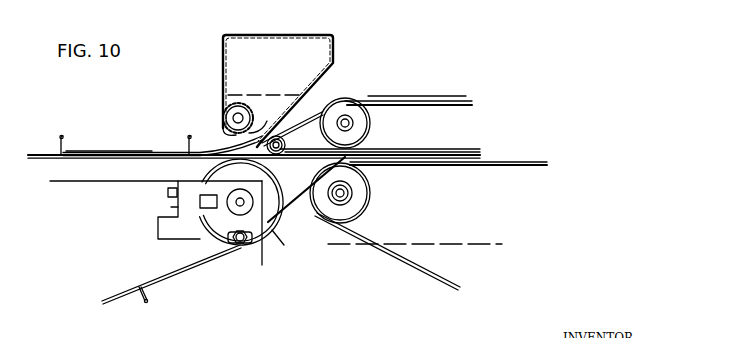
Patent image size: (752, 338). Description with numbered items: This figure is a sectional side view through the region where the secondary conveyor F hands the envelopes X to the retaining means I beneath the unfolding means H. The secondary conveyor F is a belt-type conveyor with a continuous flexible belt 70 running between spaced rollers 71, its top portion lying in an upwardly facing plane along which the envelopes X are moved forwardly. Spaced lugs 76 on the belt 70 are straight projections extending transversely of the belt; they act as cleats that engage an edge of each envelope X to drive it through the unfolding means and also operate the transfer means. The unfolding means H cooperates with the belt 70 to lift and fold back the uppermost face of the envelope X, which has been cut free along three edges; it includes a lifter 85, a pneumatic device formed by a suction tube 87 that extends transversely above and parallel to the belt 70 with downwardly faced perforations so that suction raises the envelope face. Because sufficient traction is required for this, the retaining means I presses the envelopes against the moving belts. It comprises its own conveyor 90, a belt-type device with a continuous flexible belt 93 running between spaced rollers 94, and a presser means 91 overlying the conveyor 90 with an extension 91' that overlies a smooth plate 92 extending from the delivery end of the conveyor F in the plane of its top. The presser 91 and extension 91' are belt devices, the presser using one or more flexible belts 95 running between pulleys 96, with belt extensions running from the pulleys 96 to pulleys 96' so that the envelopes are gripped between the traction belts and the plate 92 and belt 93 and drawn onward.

The conveyor belt 70 is at (102, 160).
The rollers 71 is at (276, 223).
The lug 76 is at (64, 138).
The lifter 85 is at (254, 95).
The suction tube 87 is at (243, 101).
The conveyor 90 is at (392, 262).
The presser means 91 is at (380, 105).
The extension 91' is at (317, 102).
The smooth plate 92 is at (295, 152).
The flexible belt 93 is at (420, 273).
The rollers 94 is at (358, 199).
The flexible belts 95 is at (467, 101).
The pulleys 96 is at (387, 124).
The pulleys 96' is at (390, 130).
The secondary conveyor F is at (43, 151).
The envelope X is at (141, 151).
The unfolding means H is at (340, 47).
The retaining means I is at (455, 89).